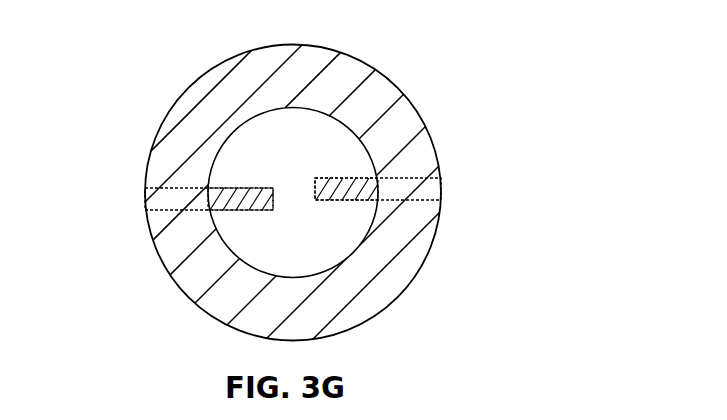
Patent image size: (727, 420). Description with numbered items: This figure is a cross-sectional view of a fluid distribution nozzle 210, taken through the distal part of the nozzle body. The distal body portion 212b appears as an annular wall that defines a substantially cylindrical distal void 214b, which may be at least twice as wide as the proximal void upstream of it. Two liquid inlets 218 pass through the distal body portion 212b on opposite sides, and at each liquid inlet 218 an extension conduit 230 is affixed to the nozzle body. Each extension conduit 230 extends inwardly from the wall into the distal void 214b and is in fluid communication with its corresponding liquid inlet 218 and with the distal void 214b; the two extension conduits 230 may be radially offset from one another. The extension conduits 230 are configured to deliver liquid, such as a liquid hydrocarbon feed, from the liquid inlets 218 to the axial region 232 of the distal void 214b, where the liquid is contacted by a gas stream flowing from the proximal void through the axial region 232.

The nozzle 210 is at (406, 65).
The distal body portion 212b is at (313, 78).
The distal void 214b is at (313, 152).
The liquid inlet 218 is at (139, 195).
The extension conduit 230 is at (239, 187).
The axial region 232 is at (292, 218).